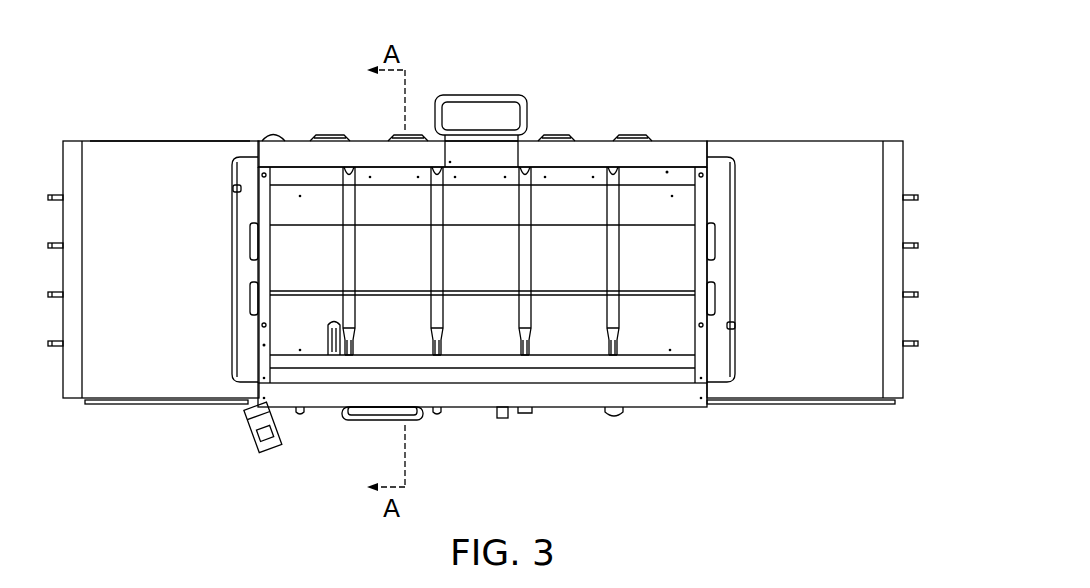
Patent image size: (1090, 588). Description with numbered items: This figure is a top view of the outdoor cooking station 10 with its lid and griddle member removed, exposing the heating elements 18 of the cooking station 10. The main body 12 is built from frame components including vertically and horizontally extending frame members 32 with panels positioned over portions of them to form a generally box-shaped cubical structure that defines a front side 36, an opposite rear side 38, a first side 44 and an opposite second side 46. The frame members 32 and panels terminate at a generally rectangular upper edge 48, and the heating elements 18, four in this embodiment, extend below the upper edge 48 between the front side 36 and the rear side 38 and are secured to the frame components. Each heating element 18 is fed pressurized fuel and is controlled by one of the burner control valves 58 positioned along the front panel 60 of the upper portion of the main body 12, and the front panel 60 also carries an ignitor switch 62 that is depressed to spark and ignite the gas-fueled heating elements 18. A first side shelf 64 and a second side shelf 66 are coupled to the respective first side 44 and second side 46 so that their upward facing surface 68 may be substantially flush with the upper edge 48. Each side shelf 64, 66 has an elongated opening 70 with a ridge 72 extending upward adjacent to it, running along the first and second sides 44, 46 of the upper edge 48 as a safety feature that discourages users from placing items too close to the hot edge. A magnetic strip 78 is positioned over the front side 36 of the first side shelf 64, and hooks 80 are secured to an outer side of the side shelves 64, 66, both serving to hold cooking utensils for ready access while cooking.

The cooking station 10 is at (820, 30).
The main body 12 is at (662, 445).
The heating elements 18 is at (432, 262).
The frame members 32 is at (370, 155).
The front side 36 is at (495, 440).
The rear side 38 is at (296, 132).
The first side 44 is at (158, 278).
The second side 46 is at (790, 240).
The upper edge 48 is at (700, 190).
The burner control valves 58 is at (612, 412).
The front panel 60 is at (683, 410).
The ignitor switch 62 is at (300, 412).
The first side shelf 64 is at (120, 132).
The second side shelf 66 is at (843, 132).
The upward facing surface 68 is at (148, 155).
The elongated opening 70 is at (233, 189).
The ridge 72 is at (232, 232).
The magnetic strip 78 is at (100, 406).
The hooks 80 is at (55, 195).